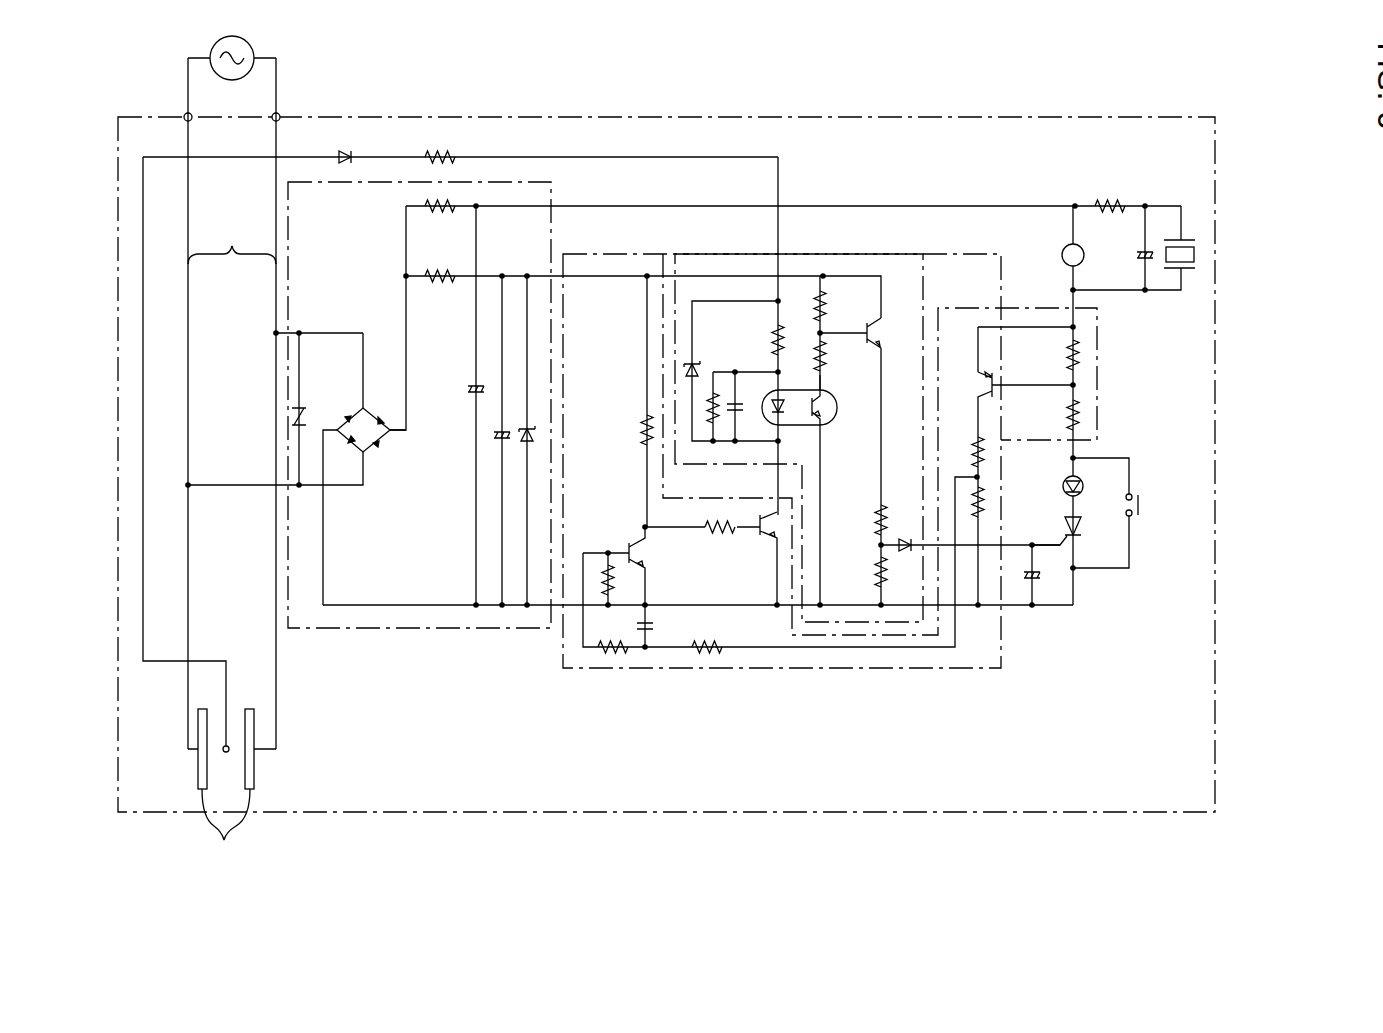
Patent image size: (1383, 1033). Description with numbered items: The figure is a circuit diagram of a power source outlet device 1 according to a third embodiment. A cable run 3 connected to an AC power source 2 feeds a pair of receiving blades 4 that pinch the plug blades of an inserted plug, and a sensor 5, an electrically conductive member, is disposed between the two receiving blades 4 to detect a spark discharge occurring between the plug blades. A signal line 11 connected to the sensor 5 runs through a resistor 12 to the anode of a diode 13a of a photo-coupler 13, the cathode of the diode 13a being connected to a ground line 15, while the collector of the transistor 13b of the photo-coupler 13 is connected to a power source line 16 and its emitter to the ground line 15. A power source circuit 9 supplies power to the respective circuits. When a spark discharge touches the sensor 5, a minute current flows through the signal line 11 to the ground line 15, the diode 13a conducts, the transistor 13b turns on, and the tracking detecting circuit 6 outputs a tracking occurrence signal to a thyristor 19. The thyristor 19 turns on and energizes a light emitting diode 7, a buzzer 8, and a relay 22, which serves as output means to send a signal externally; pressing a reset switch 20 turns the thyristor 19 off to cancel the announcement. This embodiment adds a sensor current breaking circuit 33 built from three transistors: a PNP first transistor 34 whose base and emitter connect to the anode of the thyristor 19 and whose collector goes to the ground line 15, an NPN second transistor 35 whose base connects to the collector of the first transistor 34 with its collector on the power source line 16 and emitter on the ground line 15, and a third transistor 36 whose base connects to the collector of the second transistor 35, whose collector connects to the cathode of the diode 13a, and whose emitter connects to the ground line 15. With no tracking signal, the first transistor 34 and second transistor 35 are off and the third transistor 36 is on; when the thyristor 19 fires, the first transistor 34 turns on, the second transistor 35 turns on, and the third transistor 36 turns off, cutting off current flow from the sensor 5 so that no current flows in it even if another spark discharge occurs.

The power source outlet device 1 is at (929, 117).
The AC power source 2 is at (211, 50).
The cable run 3 is at (232, 239).
The receiving blades 4 is at (232, 794).
The sensor 5 is at (229, 752).
The tracking detecting circuit 6 is at (833, 254).
The light emitting diode 7 is at (1083, 484).
The buzzer 8 is at (1196, 253).
The power source circuit 9 is at (352, 628).
The signal line 11 is at (143, 350).
The resistor 12 is at (438, 150).
The photo-coupler 13 is at (802, 443).
The diode 13a is at (775, 402).
The transistor 13b is at (836, 403).
The ground line 15 is at (676, 607).
The power source line 16 is at (708, 254).
The thyristor 19 is at (1080, 528).
The reset switch 20 is at (1141, 505).
The relay 22 is at (1066, 250).
The sensor current breaking circuit 33 is at (758, 668).
The first transistor 34 is at (990, 378).
The second transistor 35 is at (645, 527).
The third transistor 36 is at (770, 536).